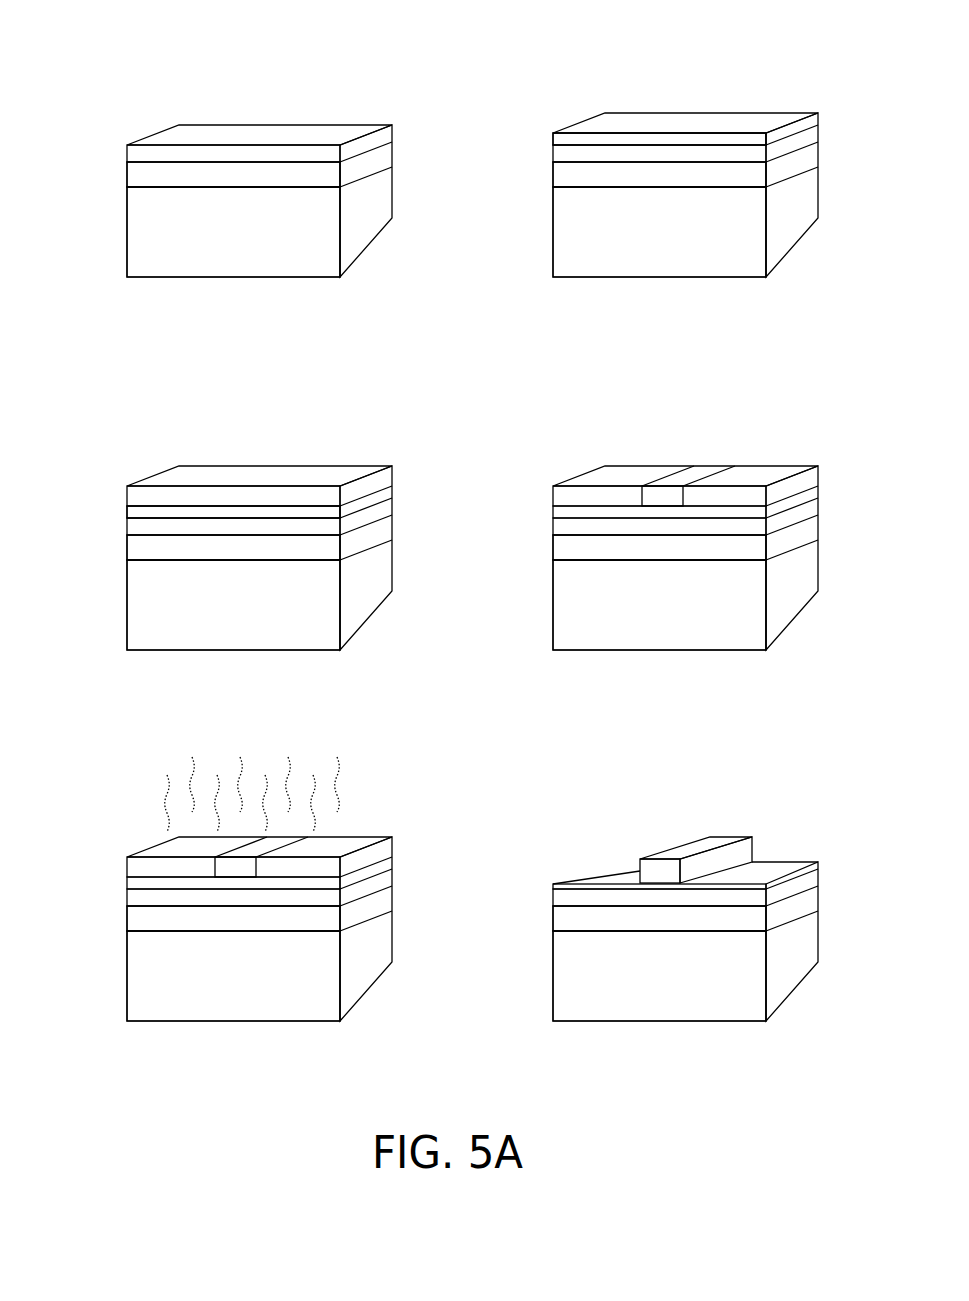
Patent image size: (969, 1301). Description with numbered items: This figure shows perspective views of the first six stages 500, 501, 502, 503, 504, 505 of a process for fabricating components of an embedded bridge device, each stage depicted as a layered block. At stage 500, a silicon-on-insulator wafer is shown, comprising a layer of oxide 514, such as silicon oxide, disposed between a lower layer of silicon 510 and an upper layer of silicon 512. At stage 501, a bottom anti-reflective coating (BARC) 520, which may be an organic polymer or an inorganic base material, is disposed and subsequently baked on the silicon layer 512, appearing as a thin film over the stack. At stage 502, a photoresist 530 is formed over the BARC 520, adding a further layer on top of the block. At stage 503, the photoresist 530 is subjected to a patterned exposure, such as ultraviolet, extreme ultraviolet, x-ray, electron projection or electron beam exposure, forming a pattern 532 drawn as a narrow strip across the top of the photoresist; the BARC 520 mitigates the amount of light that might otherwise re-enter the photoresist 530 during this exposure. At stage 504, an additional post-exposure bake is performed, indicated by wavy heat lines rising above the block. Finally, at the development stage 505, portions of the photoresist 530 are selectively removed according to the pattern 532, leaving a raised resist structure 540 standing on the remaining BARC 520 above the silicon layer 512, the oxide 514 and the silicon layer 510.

The stage 500 is at (372, 80).
The stage 501 is at (797, 80).
The stage 502 is at (372, 427).
The stage 503 is at (797, 427).
The stage 504 is at (372, 797).
The development stage 505 is at (797, 797).
The layer of silicon 510 is at (691, 990).
The layer of silicon 512 is at (120, 154).
The layer of oxide 514 is at (712, 931).
The bottom anti-reflective coating (BARC) 520 is at (545, 140).
The photoresist 530 is at (120, 494).
The pattern 532 is at (652, 478).
The resist structure 540 is at (660, 847).